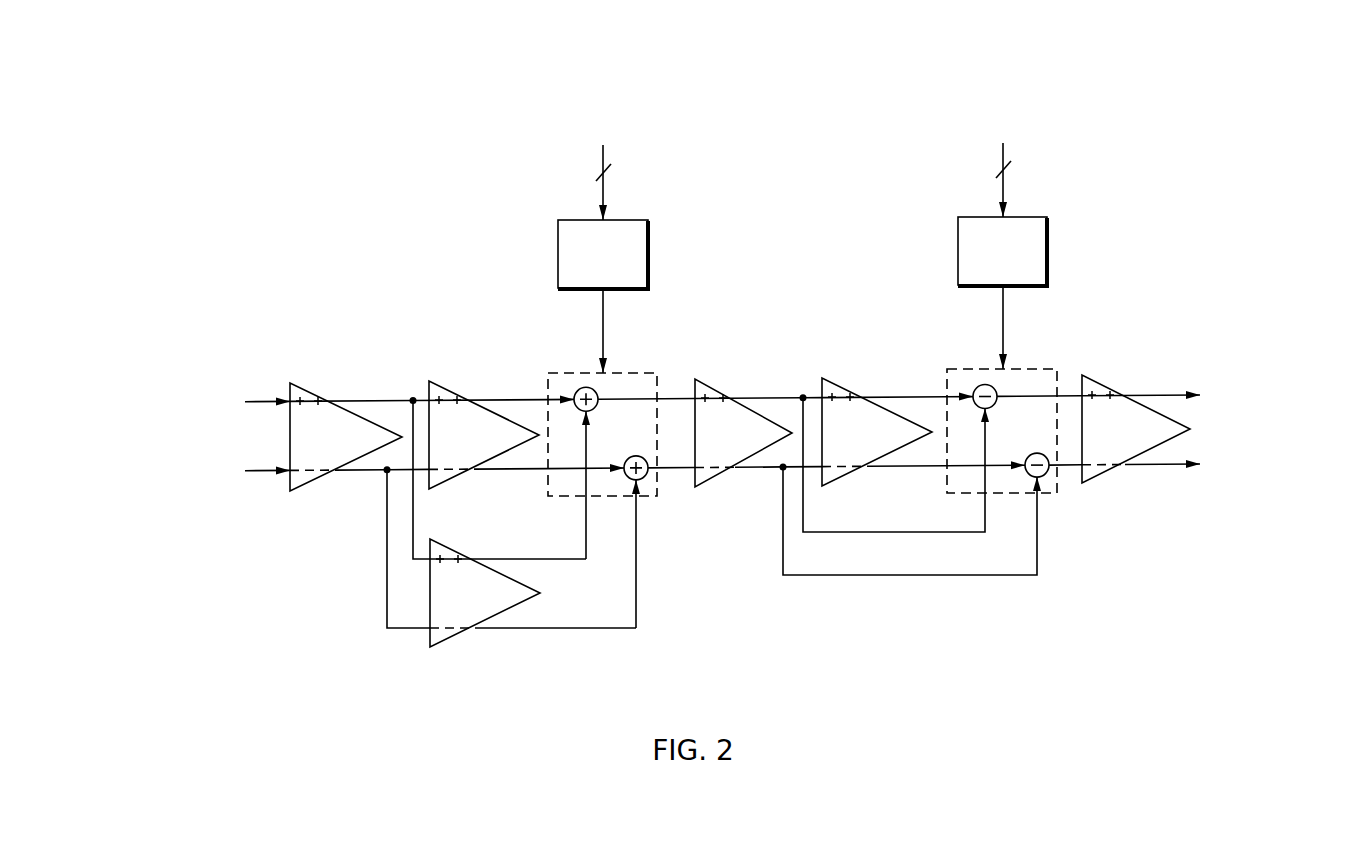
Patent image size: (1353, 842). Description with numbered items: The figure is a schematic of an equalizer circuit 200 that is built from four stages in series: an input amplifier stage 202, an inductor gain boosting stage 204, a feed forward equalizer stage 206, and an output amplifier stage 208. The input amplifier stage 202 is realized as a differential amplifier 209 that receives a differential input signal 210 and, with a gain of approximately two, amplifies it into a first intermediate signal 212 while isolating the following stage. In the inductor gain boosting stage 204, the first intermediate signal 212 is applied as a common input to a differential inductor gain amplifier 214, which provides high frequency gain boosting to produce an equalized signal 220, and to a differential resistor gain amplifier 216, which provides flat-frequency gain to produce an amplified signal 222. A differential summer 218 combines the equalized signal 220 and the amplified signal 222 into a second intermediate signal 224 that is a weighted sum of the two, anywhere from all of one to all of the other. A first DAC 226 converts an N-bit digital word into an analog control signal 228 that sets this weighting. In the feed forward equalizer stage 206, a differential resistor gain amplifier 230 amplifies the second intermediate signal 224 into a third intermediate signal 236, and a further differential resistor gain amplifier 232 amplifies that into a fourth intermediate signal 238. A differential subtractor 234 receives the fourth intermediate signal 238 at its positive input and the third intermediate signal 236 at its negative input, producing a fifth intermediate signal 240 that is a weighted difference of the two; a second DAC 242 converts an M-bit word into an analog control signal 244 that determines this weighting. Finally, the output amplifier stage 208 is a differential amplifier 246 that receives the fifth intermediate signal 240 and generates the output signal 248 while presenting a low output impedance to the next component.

The equalizer circuit 200 is at (226, 136).
The input amplifier stage 202 is at (240, 385).
The inductor gain boosting stage 204 is at (645, 683).
The feed forward equalizer stage 206 is at (1040, 600).
The output amplifier stage 208 is at (1197, 388).
The differential amplifier 209 is at (317, 484).
The differential input signal 210 is at (200, 393).
The first intermediate signal 212 is at (380, 388).
The differential inductor gain amplifier 214 is at (464, 394).
The differential resistor gain amplifier 216 is at (452, 638).
The differential summer 218 is at (626, 371).
The equalized signal 220 is at (512, 390).
The amplified signal 222 is at (556, 638).
The second intermediate signal 224 is at (681, 380).
The first DAC 226 is at (652, 225).
The analog control signal 228 is at (608, 318).
The differential resistor gain amplifier 230 is at (713, 387).
The differential resistor gain amplifier 232 is at (840, 383).
The differential subtractor 234 is at (1022, 368).
The third intermediate signal 236 is at (802, 392).
The fourth intermediate signal 238 is at (918, 392).
The fifth intermediate signal 240 is at (1069, 480).
The second DAC 242 is at (1048, 223).
The analog control signal 244 is at (1010, 305).
The differential amplifier 246 is at (1113, 472).
The output signal 248 is at (1268, 385).